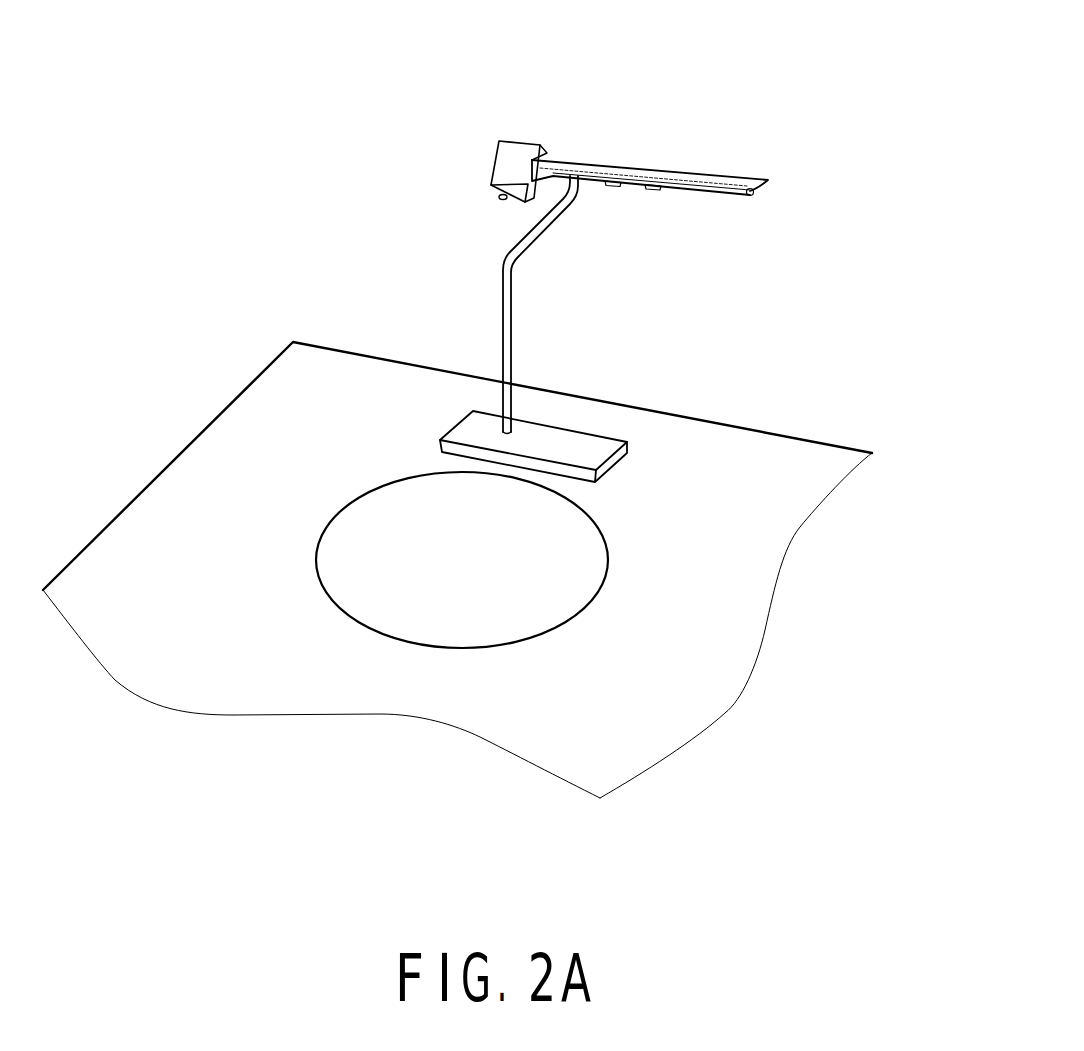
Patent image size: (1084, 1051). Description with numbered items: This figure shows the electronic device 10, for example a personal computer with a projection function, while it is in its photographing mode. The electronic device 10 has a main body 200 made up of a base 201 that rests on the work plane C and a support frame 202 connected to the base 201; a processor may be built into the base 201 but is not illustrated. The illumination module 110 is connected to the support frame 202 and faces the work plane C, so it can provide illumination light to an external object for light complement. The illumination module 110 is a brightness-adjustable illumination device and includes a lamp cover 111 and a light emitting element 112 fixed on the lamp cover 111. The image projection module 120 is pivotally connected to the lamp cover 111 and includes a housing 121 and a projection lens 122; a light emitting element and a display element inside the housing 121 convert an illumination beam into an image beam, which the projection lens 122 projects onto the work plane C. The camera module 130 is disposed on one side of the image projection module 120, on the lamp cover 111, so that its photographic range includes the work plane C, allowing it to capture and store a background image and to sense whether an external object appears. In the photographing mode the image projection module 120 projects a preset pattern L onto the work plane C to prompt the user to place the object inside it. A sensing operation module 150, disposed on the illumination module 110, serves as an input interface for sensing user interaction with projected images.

The electronic device 10 is at (458, 118).
The illumination module 110 is at (890, 155).
The lamp cover 111 is at (768, 179).
The light emitting element 112 is at (760, 193).
The image projection module 120 is at (503, 118).
The housing 121 is at (520, 148).
The projection lens 122 is at (496, 203).
The camera module 130 is at (657, 191).
The sensing operation module 150 is at (613, 184).
The main body 200 is at (368, 237).
The base 201 is at (483, 430).
The support frame 202 is at (503, 298).
The work plane C is at (832, 462).
The preset pattern L is at (600, 597).